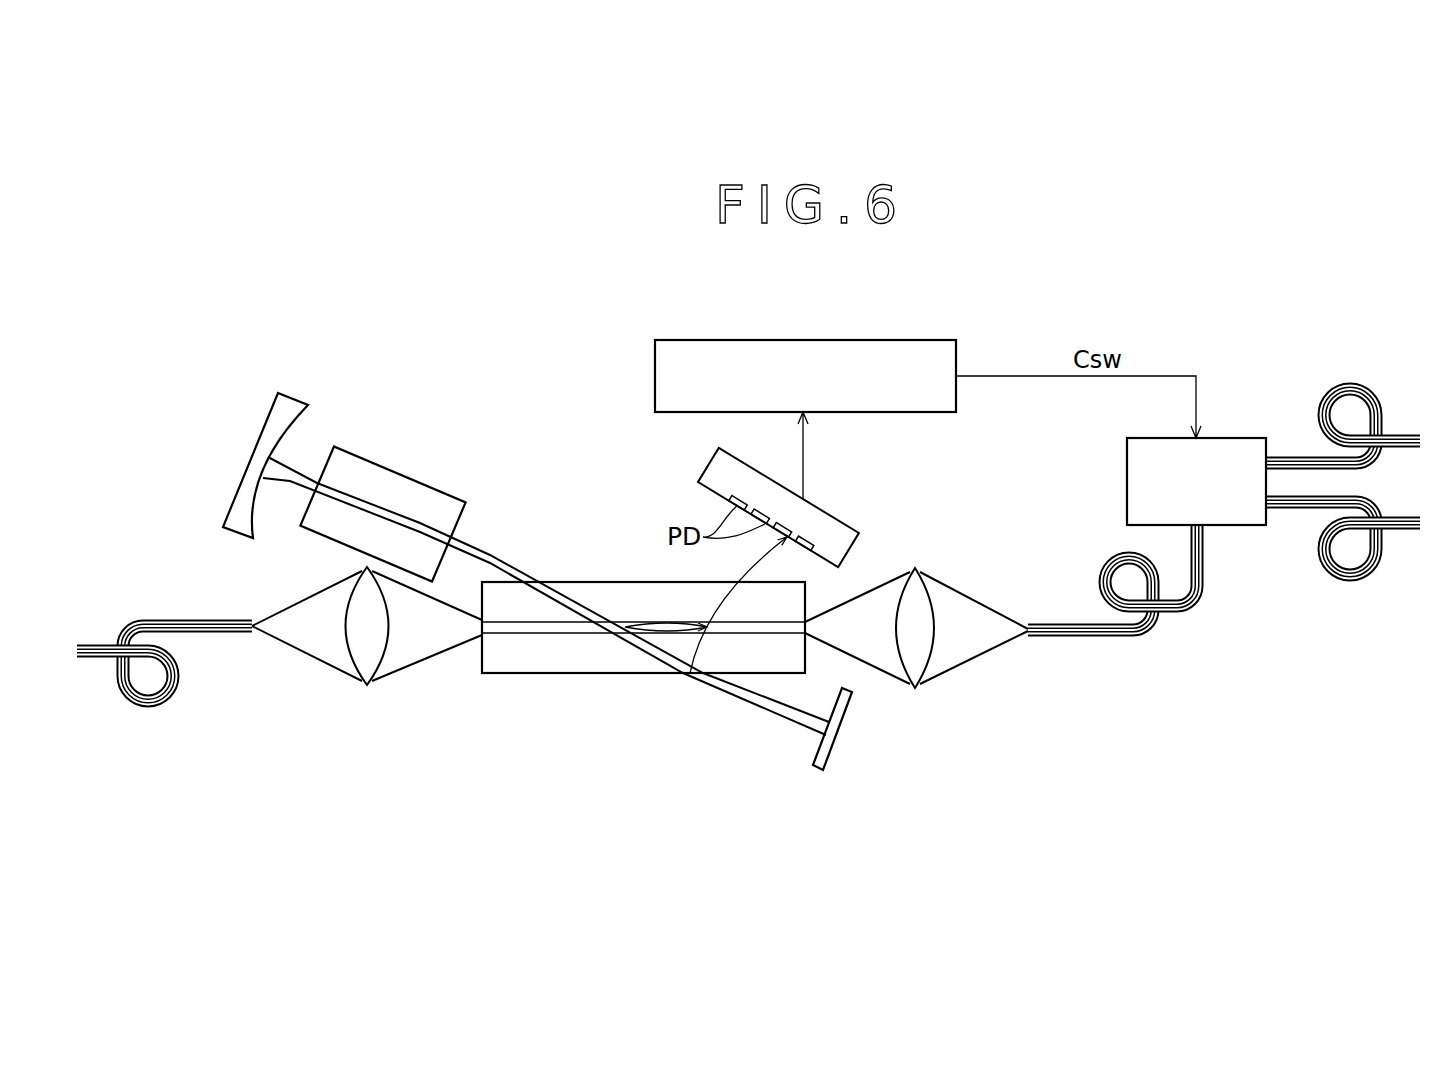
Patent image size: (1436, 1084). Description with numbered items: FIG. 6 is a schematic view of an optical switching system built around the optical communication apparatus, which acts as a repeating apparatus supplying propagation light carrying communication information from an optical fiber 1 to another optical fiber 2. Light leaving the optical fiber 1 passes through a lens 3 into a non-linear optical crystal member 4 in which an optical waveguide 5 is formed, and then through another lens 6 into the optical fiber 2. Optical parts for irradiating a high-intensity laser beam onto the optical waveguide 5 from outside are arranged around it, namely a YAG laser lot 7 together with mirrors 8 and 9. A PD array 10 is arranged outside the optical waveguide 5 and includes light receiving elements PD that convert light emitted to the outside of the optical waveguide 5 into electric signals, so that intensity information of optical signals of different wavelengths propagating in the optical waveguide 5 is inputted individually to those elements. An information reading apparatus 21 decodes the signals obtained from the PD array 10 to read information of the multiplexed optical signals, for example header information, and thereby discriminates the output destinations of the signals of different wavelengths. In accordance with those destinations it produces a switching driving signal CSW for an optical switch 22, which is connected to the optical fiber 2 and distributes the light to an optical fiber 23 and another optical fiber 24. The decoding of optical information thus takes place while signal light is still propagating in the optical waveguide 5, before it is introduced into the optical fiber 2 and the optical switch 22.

The optical fiber 1 is at (148, 707).
The optical fiber 2 is at (1137, 637).
The lens 3 is at (367, 688).
The non-linear optical crystal member 4 is at (523, 658).
The optical waveguide 5 is at (577, 628).
The lens 6 is at (915, 688).
The YAG laser lot 7 is at (401, 474).
The mirror 8 is at (292, 392).
The mirror 9 is at (818, 771).
The PD array 10 is at (711, 457).
The information reading apparatus 21 is at (805, 340).
The optical switch 22 is at (1127, 477).
The optical fiber 23 is at (1407, 434).
The optical fiber 24 is at (1405, 530).